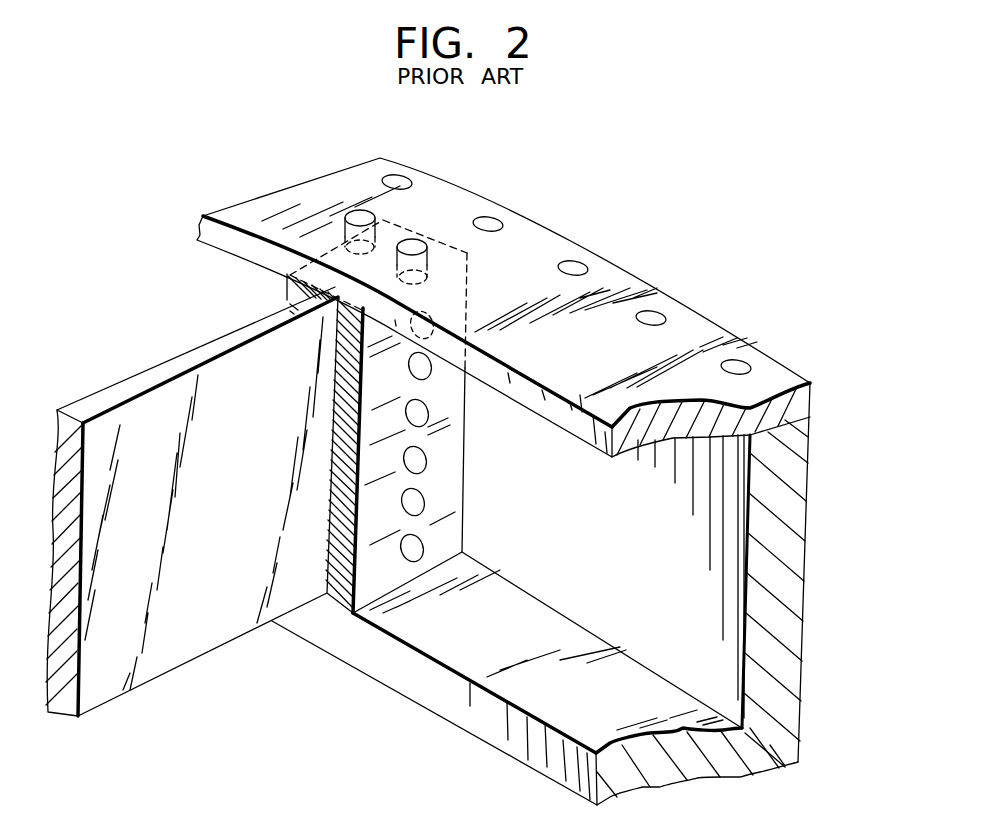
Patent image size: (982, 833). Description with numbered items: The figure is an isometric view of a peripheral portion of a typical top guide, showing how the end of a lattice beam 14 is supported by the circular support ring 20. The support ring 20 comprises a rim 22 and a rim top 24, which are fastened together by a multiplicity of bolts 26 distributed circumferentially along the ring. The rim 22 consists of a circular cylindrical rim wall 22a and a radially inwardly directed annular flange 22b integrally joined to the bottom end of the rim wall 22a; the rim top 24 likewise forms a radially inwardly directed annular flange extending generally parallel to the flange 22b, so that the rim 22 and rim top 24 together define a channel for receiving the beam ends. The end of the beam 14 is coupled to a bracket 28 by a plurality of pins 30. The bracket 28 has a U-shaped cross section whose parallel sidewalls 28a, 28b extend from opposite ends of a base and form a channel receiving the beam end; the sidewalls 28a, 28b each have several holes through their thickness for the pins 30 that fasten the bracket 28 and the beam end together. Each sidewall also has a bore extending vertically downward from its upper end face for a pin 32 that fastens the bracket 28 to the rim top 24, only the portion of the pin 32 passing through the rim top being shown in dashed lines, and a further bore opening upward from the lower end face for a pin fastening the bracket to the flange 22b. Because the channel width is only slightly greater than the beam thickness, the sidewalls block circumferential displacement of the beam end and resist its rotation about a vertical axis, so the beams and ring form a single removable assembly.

The plate 14 is at (162, 393).
The support ring 20 is at (541, 464).
The rim 22 is at (758, 575).
The rim wall 22a is at (783, 511).
The annular flange 22b is at (492, 730).
The rim top 24 is at (503, 290).
The bolts 26 is at (398, 180).
The bracket 28 is at (369, 467).
The sidewall 28a is at (438, 433).
The sidewall 28b is at (287, 284).
The pins 30 is at (422, 498).
The pin 32 is at (357, 209).